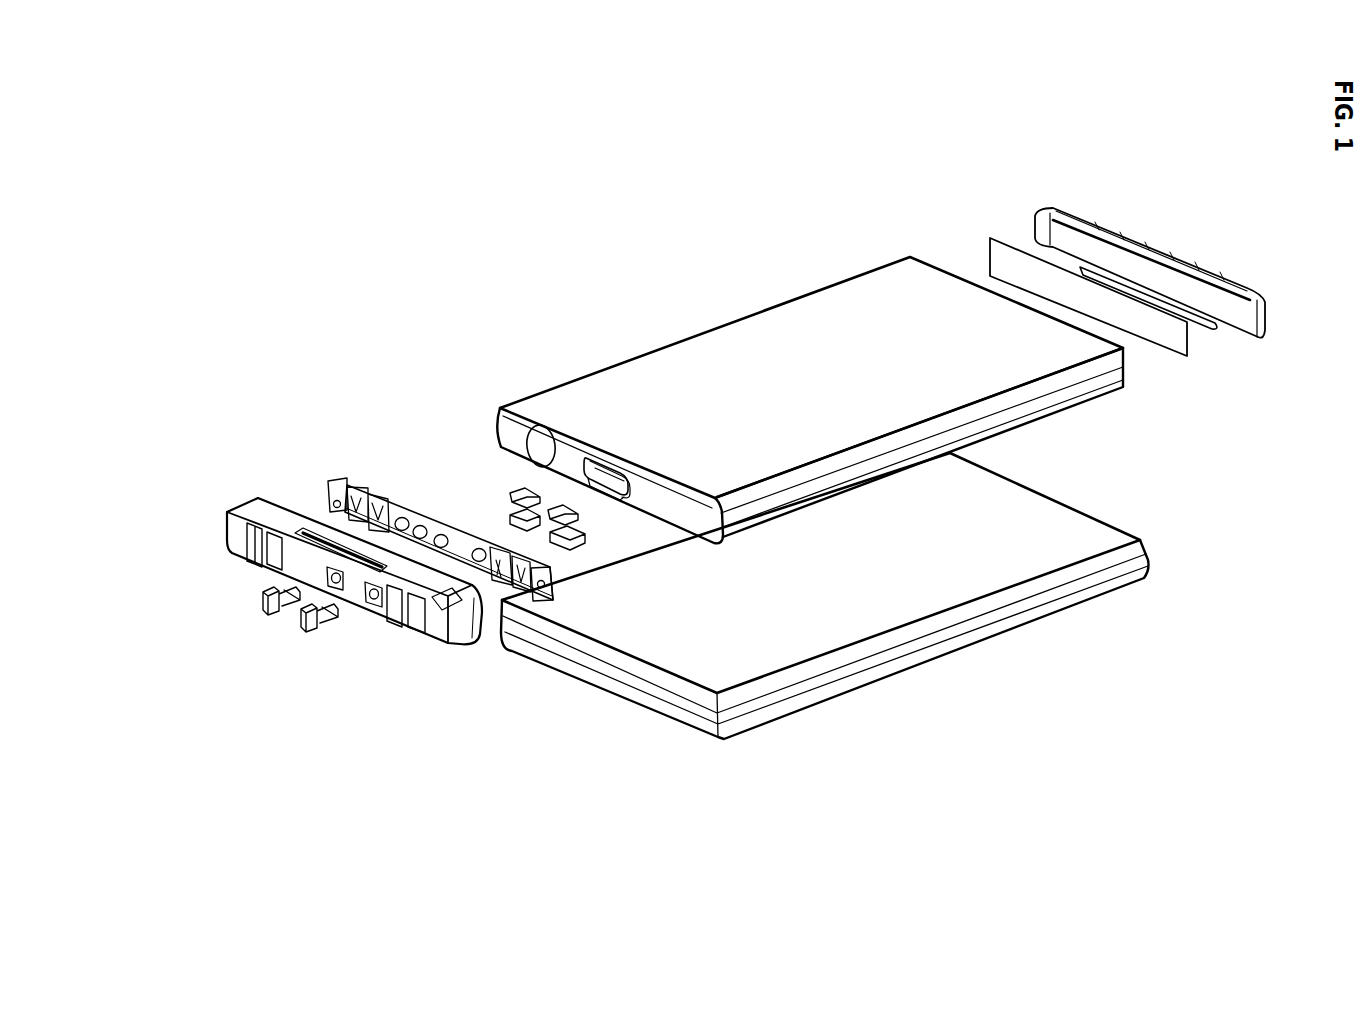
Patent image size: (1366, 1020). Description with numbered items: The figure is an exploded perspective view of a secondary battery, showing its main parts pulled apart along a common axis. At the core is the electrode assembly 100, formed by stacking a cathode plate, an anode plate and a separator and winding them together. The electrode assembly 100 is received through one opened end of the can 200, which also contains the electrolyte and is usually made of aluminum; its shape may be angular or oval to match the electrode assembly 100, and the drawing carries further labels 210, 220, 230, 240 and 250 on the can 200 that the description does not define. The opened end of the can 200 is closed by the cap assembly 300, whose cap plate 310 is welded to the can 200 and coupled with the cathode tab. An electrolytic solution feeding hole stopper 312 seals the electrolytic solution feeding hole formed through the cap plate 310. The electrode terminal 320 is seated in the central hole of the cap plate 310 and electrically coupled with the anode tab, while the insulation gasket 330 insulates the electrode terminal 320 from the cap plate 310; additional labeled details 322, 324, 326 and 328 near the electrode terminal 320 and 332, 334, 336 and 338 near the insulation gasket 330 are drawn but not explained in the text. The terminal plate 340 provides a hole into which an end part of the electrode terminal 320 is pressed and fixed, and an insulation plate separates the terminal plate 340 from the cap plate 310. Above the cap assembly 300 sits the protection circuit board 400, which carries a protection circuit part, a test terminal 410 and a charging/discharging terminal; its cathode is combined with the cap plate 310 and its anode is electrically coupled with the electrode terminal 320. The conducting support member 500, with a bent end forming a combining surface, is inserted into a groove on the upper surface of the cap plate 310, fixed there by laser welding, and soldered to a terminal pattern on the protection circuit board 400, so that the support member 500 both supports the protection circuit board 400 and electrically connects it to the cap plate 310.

The electrode assembly 100 is at (214, 115).
The can 200 is at (800, 374).
The top surface of housing 210 is at (774, 335).
The key button 220 is at (613, 479).
The side rim of housing 230 is at (712, 523).
The camera hole 240 is at (538, 447).
The button recess 250 is at (606, 463).
The cap assembly 300 is at (360, 303).
The cap plate 310 is at (510, 496).
The electrolytic solution feeding hole stopper 312 is at (583, 537).
The electrode terminal 320 is at (376, 564).
The left mounting tab 322 is at (345, 482).
The right mounting tab 324 is at (513, 598).
The through holes 326 is at (435, 535).
The contact pads 328 is at (491, 582).
The insulation gasket 330 is at (283, 639).
The left slots 332 is at (252, 549).
The right slots 334 is at (415, 627).
The first boss with hole 336 is at (333, 590).
The second boss with hole 338 is at (375, 605).
The terminal plate 340 is at (310, 620).
The protection circuit board 400 is at (1147, 240).
The test terminal 410 is at (1174, 348).
The support member 500 is at (830, 653).